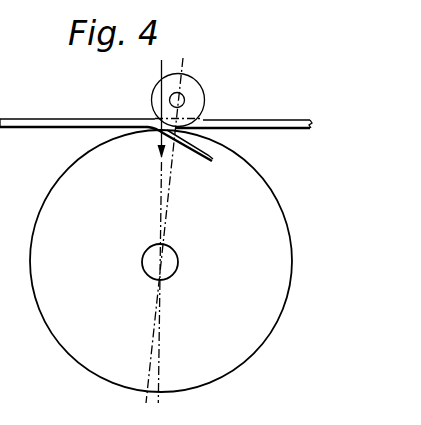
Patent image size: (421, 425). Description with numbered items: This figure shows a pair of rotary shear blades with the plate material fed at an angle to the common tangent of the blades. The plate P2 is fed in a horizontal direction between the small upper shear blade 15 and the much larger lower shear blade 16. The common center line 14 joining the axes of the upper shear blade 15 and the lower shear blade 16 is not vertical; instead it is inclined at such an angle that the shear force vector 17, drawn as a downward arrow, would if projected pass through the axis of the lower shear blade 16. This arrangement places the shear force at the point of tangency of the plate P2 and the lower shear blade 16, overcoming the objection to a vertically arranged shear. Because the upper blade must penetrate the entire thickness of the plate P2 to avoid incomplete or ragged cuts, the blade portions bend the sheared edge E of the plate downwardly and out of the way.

The common center line 14 is at (165, 217).
The upper shear blade 15 is at (202, 89).
The lower shear blade 16 is at (293, 269).
The shear force vector 17 is at (158, 144).
The sheared edge E is at (210, 167).
The plate P2 is at (42, 119).